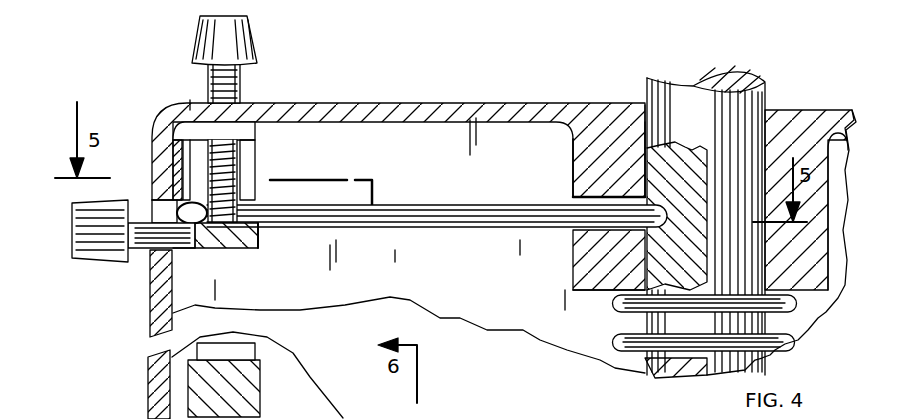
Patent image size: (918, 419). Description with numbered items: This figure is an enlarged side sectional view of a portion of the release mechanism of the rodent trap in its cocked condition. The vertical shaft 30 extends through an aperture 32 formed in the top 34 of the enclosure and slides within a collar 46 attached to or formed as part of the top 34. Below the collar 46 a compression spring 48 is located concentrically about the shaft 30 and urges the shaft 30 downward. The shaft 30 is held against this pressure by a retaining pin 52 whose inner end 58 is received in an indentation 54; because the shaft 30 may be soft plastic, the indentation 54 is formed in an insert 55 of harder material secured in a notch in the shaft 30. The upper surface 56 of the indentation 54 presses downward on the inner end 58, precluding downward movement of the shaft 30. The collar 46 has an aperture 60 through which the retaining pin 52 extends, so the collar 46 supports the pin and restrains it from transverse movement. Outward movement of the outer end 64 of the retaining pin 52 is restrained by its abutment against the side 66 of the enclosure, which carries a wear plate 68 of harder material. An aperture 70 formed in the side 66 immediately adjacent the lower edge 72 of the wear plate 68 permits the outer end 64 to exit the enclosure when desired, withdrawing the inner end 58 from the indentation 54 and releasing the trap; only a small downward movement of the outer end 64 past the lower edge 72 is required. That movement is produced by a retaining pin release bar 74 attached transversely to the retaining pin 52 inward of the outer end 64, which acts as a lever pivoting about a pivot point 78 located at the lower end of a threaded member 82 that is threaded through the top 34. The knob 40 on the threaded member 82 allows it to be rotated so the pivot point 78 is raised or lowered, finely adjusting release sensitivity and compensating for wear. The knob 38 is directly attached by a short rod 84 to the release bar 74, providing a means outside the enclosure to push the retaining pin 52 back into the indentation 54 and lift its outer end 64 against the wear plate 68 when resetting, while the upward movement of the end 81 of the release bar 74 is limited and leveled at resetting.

The shaft 30 is at (753, 97).
The aperture 32 is at (645, 115).
The top 34 is at (433, 103).
The knob 38 is at (72, 255).
The knob 40 is at (242, 55).
The collar 46 is at (818, 258).
The compression spring 48 is at (642, 343).
The retaining pin 52 is at (493, 222).
The indentation 54 is at (670, 212).
The insert 55 is at (618, 288).
The upper surface 56 is at (645, 162).
The inner end 58 is at (647, 236).
The aperture 60 is at (575, 196).
The outer end 64 is at (203, 228).
The side 66 is at (152, 316).
The wear plate 68 is at (175, 160).
The aperture 70 is at (157, 258).
The lower edge 72 is at (180, 252).
The retaining pin release bar 74 is at (257, 232).
The pivot point 78 is at (243, 248).
The end 81 is at (253, 352).
The threaded member 82 is at (233, 92).
The short rod 84 is at (143, 233).